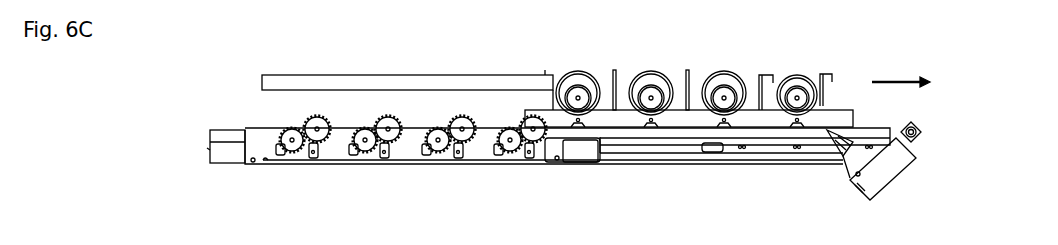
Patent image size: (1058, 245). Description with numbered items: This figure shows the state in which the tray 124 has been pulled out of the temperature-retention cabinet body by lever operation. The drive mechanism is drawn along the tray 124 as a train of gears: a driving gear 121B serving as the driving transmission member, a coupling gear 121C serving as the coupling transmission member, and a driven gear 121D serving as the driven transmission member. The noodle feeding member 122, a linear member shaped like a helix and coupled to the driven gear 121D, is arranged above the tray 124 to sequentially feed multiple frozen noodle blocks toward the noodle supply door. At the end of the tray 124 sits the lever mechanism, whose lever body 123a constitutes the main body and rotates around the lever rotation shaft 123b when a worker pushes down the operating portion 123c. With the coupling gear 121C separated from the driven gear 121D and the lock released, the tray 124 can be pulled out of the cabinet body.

The driving gear 121B is at (290, 155).
The coupling gear 121C is at (322, 114).
The driven gear 121D is at (566, 82).
The noodle feeding member 122 is at (595, 74).
The lever body 123a is at (889, 191).
The lever rotation shaft 123b is at (845, 165).
The operating portion 123c is at (906, 123).
The tray 124 is at (688, 169).